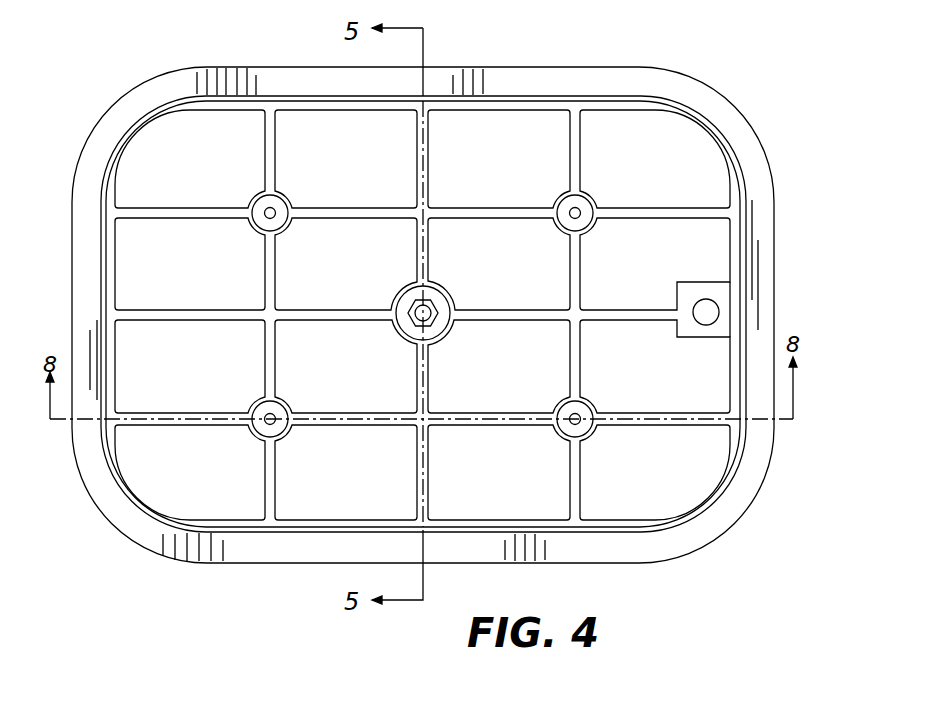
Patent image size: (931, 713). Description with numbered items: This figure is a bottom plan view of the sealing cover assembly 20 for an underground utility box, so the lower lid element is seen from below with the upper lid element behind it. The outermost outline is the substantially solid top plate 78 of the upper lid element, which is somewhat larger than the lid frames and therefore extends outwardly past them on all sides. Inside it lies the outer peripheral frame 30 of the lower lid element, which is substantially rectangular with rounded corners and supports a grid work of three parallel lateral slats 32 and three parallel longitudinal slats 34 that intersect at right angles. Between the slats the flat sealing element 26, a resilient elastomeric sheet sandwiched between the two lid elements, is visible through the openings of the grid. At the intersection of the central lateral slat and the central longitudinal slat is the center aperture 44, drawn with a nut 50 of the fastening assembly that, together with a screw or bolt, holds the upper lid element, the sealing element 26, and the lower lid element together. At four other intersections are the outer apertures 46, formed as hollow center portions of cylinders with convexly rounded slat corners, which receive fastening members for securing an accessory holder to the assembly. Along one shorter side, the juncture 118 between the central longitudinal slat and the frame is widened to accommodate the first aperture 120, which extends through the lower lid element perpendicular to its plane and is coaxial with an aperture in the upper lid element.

The sealing cover assembly 20 is at (190, 50).
The sealing element 26 is at (500, 172).
The outer peripheral frame 30 is at (738, 228).
The lateral slats 32 is at (265, 472).
The longitudinal slats 34 is at (200, 208).
The center aperture 44 is at (413, 305).
The outer apertures 46 is at (283, 204).
The nut 50 is at (437, 305).
The top plate 78 is at (731, 100).
The juncture 118 is at (677, 337).
The first aperture 120 is at (706, 299).